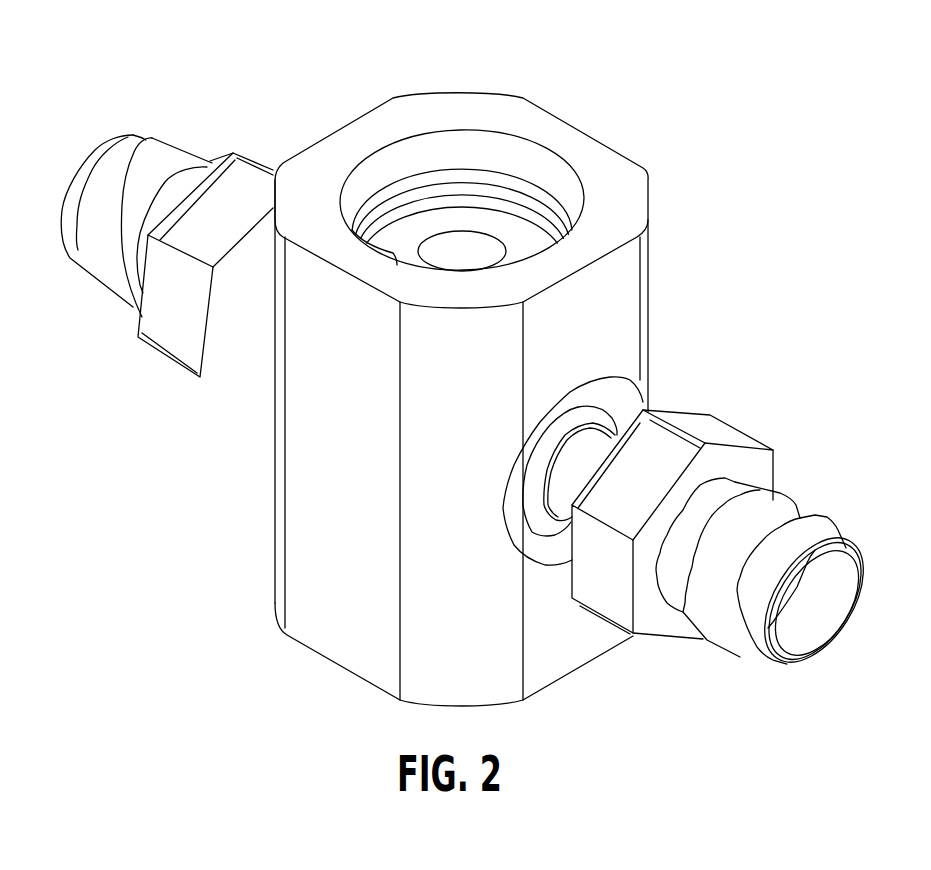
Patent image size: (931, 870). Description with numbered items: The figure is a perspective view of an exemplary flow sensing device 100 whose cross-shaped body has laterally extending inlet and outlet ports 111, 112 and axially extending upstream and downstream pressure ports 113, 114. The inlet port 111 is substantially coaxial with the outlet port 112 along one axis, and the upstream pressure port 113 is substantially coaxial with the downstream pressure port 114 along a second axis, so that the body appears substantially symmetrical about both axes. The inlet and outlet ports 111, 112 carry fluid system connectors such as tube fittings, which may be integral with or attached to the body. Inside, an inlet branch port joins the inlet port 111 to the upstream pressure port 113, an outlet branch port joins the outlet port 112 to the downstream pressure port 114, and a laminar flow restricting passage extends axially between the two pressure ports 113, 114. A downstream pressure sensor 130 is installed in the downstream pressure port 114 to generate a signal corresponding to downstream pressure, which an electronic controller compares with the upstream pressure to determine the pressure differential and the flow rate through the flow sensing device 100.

The flow sensing device 100 is at (680, 62).
The inlet port 111 is at (273, 347).
The outlet port 112 is at (570, 423).
The upstream pressure port 113 is at (360, 725).
The downstream pressure port 114 is at (527, 176).
The downstream pressure sensor 130 is at (433, 232).